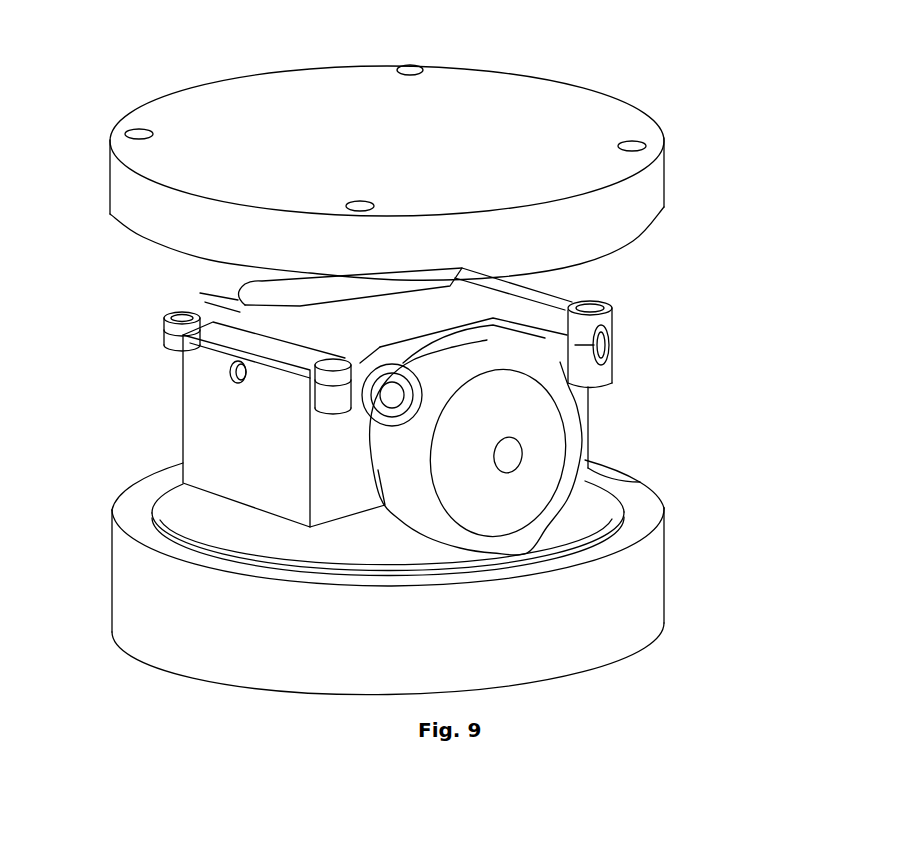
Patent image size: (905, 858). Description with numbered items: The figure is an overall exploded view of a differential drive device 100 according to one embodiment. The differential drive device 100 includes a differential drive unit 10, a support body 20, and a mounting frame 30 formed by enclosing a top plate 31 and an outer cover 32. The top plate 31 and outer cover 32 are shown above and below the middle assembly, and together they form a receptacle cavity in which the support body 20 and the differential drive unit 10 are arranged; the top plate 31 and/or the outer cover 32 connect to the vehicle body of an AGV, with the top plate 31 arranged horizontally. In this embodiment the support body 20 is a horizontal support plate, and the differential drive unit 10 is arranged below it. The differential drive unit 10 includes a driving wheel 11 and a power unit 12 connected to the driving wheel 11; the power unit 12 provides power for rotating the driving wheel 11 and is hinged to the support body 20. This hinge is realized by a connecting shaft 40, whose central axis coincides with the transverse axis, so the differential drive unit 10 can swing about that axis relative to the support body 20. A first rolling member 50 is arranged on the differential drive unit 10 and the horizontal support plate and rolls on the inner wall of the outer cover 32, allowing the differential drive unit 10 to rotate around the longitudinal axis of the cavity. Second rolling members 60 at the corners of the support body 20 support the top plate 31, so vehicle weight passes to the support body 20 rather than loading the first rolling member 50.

The differential drive device 100 is at (120, 82).
The mounting frame 30 is at (686, 175).
The top plate 31 is at (580, 121).
The outer cover 32 is at (648, 593).
The support body 20 is at (228, 311).
The first rolling member 50 is at (176, 337).
The second rolling member 60 is at (608, 354).
The connecting shaft 40 is at (228, 374).
The power unit 12 is at (205, 427).
The differential drive unit 10 is at (602, 408).
The driving wheel 11 is at (555, 443).